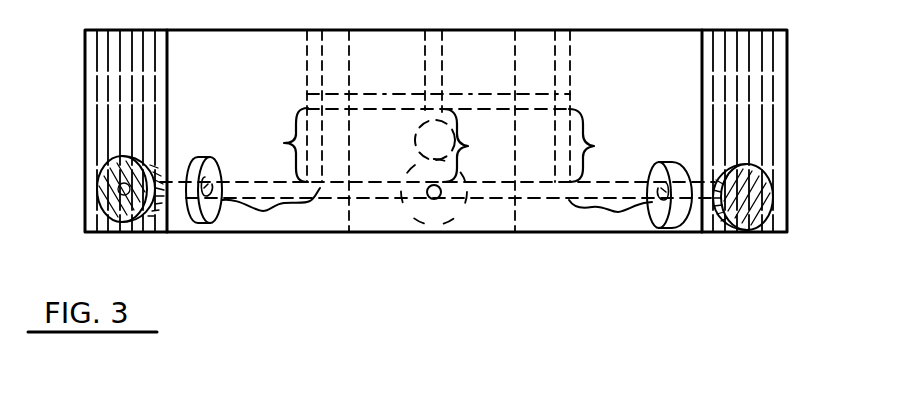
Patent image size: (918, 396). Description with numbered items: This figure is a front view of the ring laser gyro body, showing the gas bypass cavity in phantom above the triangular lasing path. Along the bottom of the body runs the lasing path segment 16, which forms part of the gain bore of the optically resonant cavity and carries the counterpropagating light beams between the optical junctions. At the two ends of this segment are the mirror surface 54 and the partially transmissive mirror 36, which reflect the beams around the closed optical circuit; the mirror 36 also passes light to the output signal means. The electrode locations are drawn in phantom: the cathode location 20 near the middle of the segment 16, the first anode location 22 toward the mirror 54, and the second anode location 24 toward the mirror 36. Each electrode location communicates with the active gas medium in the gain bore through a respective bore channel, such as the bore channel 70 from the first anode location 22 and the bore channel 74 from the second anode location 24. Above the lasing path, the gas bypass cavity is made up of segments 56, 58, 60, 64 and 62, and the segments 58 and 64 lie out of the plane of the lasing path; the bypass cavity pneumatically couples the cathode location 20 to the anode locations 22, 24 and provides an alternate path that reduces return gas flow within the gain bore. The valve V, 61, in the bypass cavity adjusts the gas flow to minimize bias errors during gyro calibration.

The lasing path segment 16 is at (318, 188).
The cathode location 20 is at (433, 199).
The anode 1 location 22 is at (221, 158).
The anode 2 location 24 is at (666, 153).
The partially transmissive mirror 36 is at (778, 177).
The mirror surface 54 is at (100, 177).
The gas bypass cavity segment 56 is at (284, 143).
The gas bypass cavity segment 58 is at (388, 102).
The gas bypass cavity segment 60 is at (460, 106).
The valve V 61 is at (416, 142).
The gas bypass cavity segment 62 is at (588, 106).
The gas bypass cavity segment 64 is at (476, 100).
The bore channel 70 is at (271, 211).
The bore channel 74 is at (610, 216).